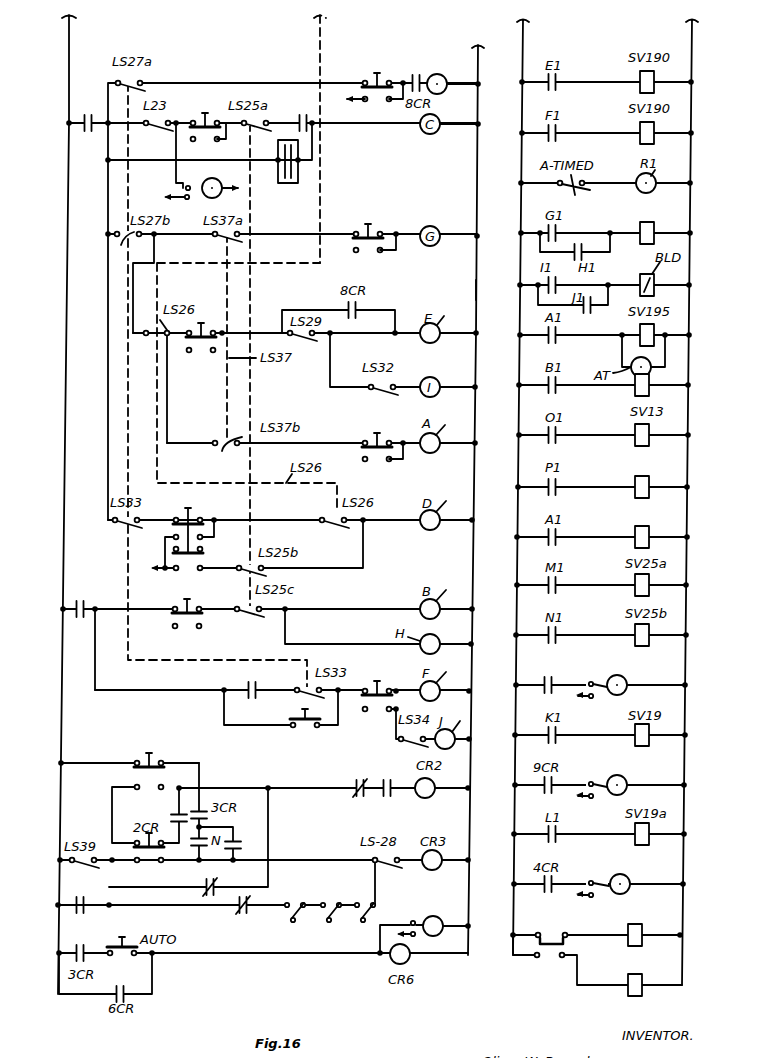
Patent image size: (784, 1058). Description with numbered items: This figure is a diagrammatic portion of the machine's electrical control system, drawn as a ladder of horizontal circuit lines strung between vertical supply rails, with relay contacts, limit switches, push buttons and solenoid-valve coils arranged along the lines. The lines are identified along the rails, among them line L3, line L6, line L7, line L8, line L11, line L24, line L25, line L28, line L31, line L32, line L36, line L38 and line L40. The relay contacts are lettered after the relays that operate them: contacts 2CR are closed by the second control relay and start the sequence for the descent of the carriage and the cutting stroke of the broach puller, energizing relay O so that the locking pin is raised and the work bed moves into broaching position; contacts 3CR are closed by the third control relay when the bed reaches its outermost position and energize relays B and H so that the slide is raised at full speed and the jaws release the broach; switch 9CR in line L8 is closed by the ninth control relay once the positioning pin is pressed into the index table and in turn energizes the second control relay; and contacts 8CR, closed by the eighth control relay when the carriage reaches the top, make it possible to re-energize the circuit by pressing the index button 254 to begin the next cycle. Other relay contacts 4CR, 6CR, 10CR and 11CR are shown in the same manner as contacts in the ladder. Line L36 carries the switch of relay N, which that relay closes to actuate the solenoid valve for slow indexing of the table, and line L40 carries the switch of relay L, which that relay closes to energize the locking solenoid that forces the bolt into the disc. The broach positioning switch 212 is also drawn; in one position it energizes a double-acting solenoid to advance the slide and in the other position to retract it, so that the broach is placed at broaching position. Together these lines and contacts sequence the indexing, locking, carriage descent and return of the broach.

The index button 254 is at (374, 78).
The broach positioning switch 212 is at (556, 927).
The line L3 is at (253, 123).
The line L6 is at (250, 608).
The line L7 is at (126, 690).
The line L8 is at (113, 763).
The line L11 is at (197, 905).
The line L24 is at (479, 83).
The line L25 is at (475, 129).
The line L28 is at (493, 288).
The line L31 is at (475, 385).
The line L32 is at (475, 435).
The line L36 is at (475, 636).
The line L38 is at (483, 736).
The line L40 is at (476, 843).
The contacts 2CR is at (91, 112).
The contacts 3CR is at (85, 596).
The relay contact 4CR is at (241, 913).
The relay contact 6CR is at (147, 896).
The contacts 8CR is at (303, 114).
The switch 9CR is at (375, 777).
The relay contact 10CR is at (550, 677).
The relay contact 11CR is at (255, 682).